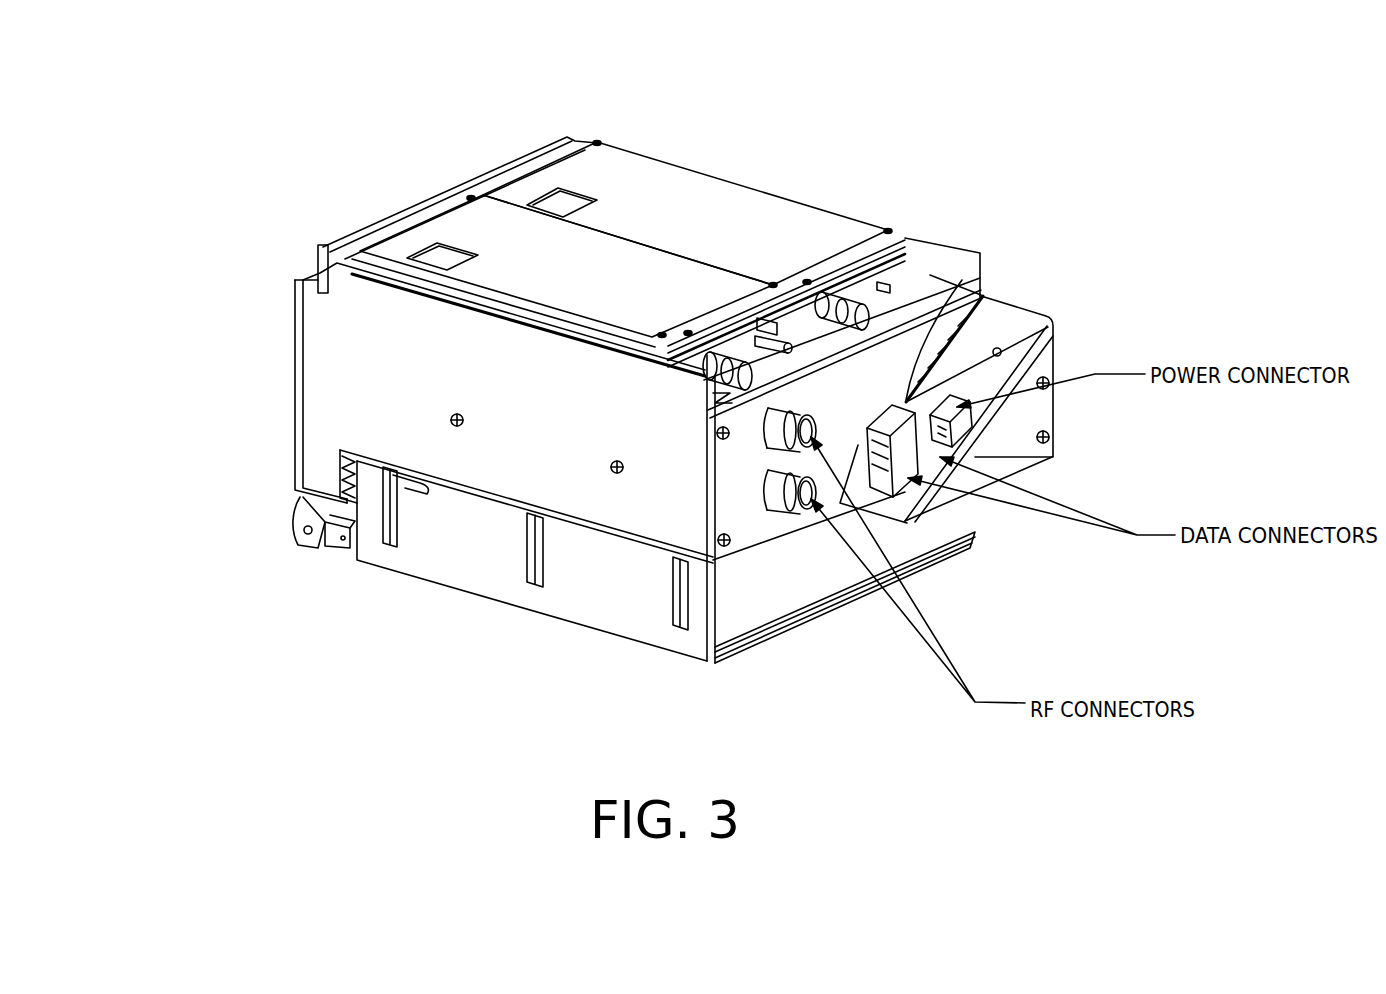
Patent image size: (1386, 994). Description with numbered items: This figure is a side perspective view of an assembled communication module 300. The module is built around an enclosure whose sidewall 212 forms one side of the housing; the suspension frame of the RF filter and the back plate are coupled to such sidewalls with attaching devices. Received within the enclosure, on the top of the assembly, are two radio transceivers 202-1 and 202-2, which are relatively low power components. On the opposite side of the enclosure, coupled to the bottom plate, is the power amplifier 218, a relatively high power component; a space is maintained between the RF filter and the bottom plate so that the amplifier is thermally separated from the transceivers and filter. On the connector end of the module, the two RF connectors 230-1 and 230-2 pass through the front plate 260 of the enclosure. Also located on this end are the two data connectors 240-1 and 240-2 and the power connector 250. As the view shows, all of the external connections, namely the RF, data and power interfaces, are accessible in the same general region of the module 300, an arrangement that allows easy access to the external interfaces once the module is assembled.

The assembled module 300 is at (1128, 156).
The radio transceiver 202-1 is at (642, 296).
The radio transceiver 202-2 is at (807, 237).
The sidewall 212 is at (330, 363).
The power amplifier 218 is at (592, 572).
The RF connector 230-1 is at (808, 433).
The RF connector 230-2 is at (808, 495).
The data connector 240-1 is at (903, 520).
The data connector 240-2 is at (960, 395).
The power connector 250 is at (1053, 455).
The front plate 260 is at (925, 347).